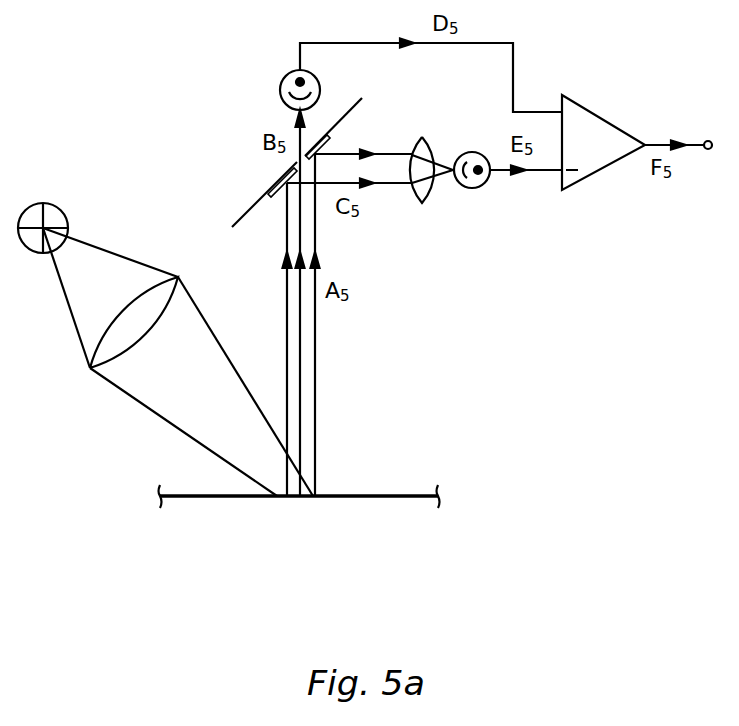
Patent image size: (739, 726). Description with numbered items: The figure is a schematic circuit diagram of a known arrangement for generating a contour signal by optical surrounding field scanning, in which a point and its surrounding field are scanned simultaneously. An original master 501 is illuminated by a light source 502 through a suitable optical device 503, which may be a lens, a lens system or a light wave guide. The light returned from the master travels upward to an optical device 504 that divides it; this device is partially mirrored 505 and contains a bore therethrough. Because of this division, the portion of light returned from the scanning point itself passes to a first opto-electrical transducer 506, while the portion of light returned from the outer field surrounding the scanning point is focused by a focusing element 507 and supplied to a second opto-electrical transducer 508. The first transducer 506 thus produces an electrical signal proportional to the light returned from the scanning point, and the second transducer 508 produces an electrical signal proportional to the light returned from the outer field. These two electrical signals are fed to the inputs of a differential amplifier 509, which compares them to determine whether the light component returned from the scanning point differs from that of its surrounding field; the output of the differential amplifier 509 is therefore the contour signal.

The original master 501 is at (237, 498).
The light source 502 is at (54, 216).
The optical device 503 is at (112, 362).
The optical device 504 is at (243, 213).
The partially mirrored portion 505 is at (277, 194).
The opto-electrical transducer 506 is at (281, 84).
The focusing device 507 is at (425, 188).
The opto-electrical transducer 508 is at (481, 186).
The differential amplifier 509 is at (598, 126).